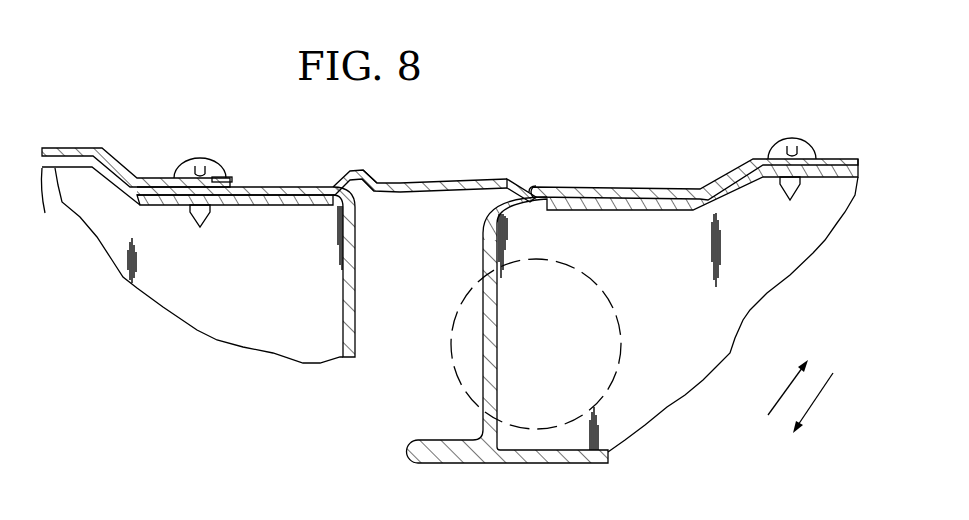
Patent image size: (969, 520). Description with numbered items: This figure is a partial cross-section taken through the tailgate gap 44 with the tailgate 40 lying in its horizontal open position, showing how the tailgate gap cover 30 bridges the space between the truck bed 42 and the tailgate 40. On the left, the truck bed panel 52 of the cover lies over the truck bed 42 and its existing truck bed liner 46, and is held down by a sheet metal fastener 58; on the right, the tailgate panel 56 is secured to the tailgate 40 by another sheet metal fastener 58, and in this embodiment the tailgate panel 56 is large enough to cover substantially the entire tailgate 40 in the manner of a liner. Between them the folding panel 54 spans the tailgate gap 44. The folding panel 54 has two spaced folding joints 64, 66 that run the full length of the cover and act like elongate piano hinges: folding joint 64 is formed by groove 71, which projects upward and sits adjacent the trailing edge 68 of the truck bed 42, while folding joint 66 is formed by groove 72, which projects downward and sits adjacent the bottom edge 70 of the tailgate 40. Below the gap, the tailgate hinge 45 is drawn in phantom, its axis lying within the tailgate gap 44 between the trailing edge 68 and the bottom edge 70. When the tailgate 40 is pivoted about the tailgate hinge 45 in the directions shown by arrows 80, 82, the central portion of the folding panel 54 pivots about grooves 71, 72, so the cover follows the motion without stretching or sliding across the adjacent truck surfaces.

The tailgate gap cover 30 is at (486, 90).
The tailgate 40 is at (813, 253).
The truck bed 42 is at (190, 265).
The tailgate gap 44 is at (355, 412).
The tailgate hinge 45 is at (458, 380).
The truck bed liner 46 is at (102, 150).
The truck bed panel 52 is at (297, 186).
The folding panel 54 is at (465, 181).
The tailgate panel 56 is at (670, 190).
The sheet metal fastener 58 is at (186, 160).
The folding joint 64 is at (363, 170).
The folding joint 66 is at (523, 185).
The trailing edge 68 is at (357, 208).
The bottom edge 70 is at (488, 237).
The groove 71 is at (373, 178).
The groove 72 is at (521, 182).
The arrow 80 is at (817, 400).
The arrow 82 is at (783, 395).